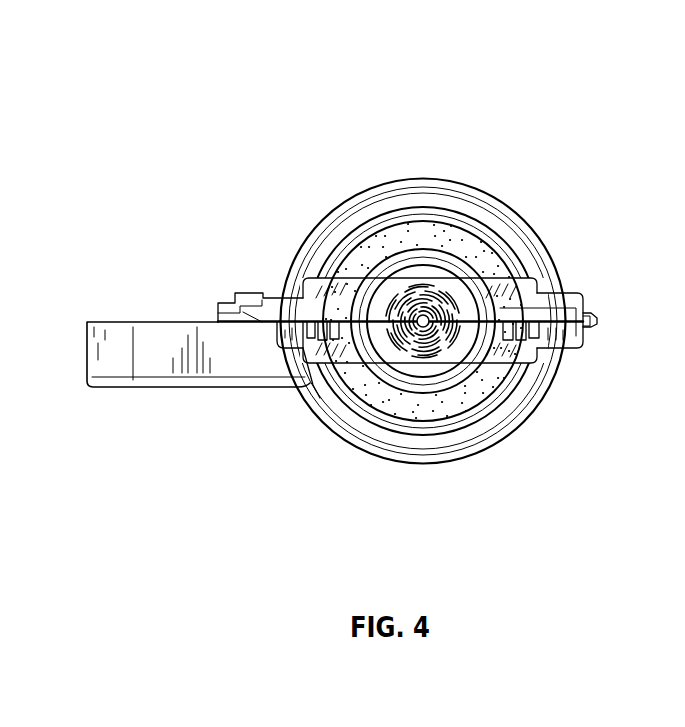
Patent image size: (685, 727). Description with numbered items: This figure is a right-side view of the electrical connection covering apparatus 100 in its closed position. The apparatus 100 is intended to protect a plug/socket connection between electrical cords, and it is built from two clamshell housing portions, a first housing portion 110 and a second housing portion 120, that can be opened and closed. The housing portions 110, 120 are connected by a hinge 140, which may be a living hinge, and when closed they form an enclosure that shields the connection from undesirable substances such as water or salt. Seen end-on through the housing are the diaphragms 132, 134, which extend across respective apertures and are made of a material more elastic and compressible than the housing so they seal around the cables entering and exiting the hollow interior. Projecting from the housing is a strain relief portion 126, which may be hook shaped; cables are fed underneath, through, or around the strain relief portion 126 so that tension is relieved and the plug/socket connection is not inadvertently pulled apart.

The electrical connection covering apparatus 100 is at (584, 72).
The first housing portion 110 is at (541, 233).
The second housing portion 120 is at (548, 400).
The strain relief portion 126 is at (143, 387).
The diaphragm 132 is at (428, 280).
The diaphragm 134 is at (412, 365).
The hinge 140 is at (597, 321).